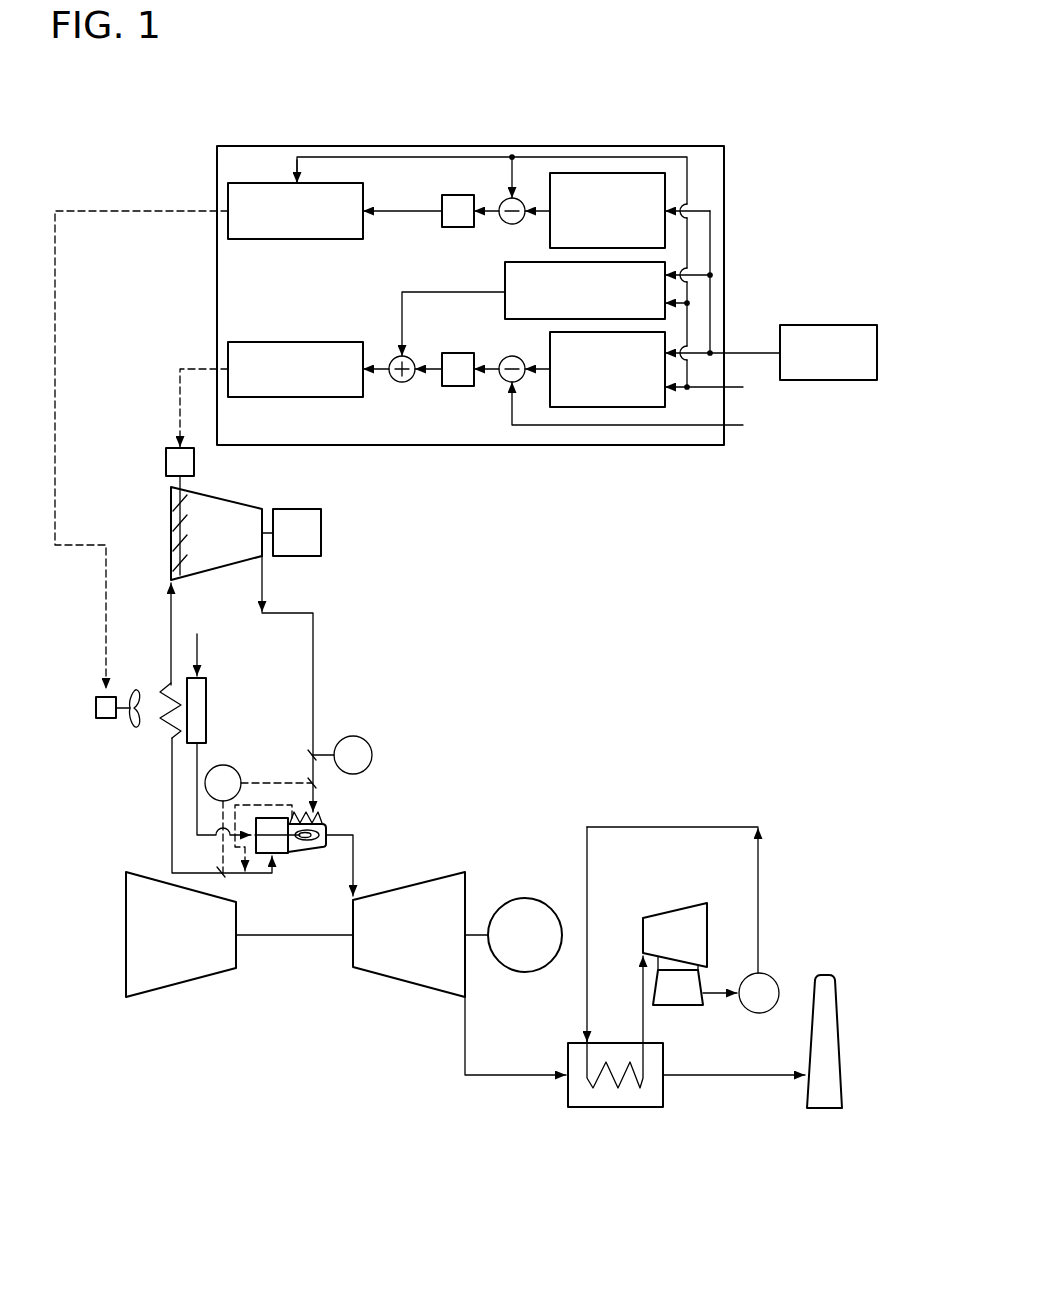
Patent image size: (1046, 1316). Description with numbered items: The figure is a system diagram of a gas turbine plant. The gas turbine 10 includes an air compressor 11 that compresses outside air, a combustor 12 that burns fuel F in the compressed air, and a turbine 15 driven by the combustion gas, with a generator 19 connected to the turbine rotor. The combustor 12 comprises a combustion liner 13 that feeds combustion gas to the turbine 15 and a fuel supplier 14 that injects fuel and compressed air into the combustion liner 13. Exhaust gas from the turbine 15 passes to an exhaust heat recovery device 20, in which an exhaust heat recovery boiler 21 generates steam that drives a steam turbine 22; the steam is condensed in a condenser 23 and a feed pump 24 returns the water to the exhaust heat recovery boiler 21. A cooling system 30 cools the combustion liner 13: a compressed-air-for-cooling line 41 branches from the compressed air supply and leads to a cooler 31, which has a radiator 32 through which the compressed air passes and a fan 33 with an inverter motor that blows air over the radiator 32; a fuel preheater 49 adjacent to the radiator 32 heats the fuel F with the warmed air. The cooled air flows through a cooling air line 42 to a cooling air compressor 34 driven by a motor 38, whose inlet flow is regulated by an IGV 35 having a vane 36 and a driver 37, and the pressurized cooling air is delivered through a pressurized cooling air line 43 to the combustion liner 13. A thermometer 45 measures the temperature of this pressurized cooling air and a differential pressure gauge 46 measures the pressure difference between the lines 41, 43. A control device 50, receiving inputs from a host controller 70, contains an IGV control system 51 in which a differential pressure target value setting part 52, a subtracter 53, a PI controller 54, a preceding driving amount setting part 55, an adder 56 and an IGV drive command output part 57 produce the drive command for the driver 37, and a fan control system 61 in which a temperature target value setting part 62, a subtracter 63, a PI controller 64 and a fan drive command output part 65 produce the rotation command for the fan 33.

The gas turbine 10 is at (303, 926).
The air compressor 11 is at (165, 992).
The combustor 12 is at (364, 827).
The combustion liner 13 is at (327, 823).
The fuel supplier 14 is at (300, 815).
The turbine 15 is at (400, 980).
The generator 19 is at (522, 898).
The exhaust heat recovery device 20 is at (653, 1003).
The exhaust heat recovery boiler 21 is at (610, 1107).
The steam turbine 22 is at (673, 905).
The condenser 23 is at (683, 1005).
The feed pump 24 is at (770, 977).
The cooling system 30 is at (243, 544).
The cooler 31 is at (141, 525).
The radiator 32 is at (162, 728).
The fan 33 is at (133, 727).
The cooling air compressor 34 is at (225, 498).
The IGV (inlet guide vane) 35 is at (147, 472).
The vane 36 is at (144, 525).
The driver 37 is at (166, 462).
The motor 38 is at (321, 527).
The compressed-air-for-cooling line 41 is at (172, 845).
The cooling air line 42 is at (171, 612).
The pressurized cooling air line 43 is at (313, 655).
The thermometer 45 is at (367, 742).
The differential pressure gauge 46 is at (232, 766).
The fuel preheater 49 is at (206, 695).
The control device 50 is at (501, 308).
The IGV control system 51 is at (531, 447).
The differential pressure target value setting part 52 is at (618, 407).
The subtracter 53 is at (512, 382).
The PI controller 54 is at (460, 386).
The preceding driving amount setting part 55 is at (505, 275).
The adder 56 is at (402, 382).
The IGV drive command output part 57 is at (340, 397).
The fan control system 61 is at (375, 156).
The temperature target value setting part 62 is at (625, 173).
The subtracter 63 is at (505, 198).
The PI controller 64 is at (458, 195).
The fan drive command output part 65 is at (272, 183).
The host controller 70 is at (848, 325).